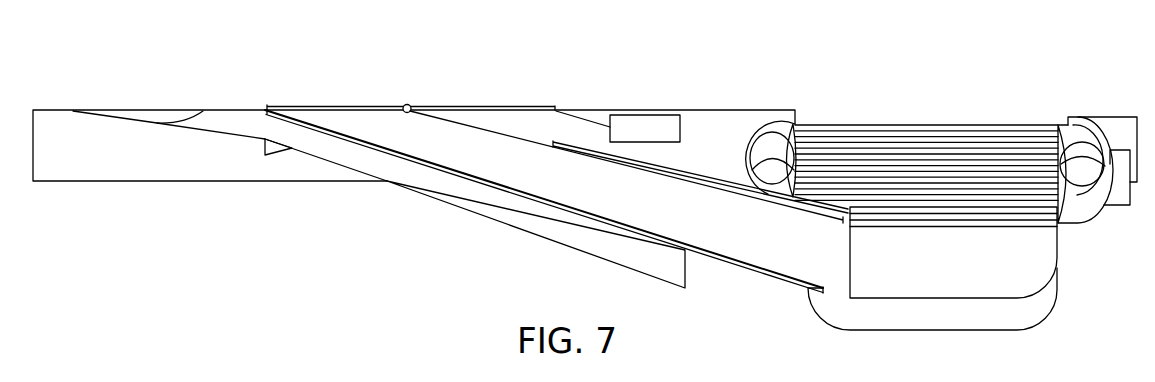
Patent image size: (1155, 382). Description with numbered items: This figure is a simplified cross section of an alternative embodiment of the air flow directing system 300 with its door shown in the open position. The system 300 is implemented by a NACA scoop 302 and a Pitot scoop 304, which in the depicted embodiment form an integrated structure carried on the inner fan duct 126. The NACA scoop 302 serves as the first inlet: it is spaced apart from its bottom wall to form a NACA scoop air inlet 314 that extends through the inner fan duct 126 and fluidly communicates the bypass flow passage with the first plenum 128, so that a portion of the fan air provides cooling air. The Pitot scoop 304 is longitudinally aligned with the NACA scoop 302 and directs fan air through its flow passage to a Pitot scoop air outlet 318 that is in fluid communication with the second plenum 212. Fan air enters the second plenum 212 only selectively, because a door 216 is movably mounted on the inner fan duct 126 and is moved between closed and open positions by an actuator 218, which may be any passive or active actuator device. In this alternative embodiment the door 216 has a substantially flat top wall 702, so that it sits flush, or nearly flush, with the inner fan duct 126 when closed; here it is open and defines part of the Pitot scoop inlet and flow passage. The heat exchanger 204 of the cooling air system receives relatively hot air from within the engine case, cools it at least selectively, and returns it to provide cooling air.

The inner fan duct 126 is at (73, 110).
The first plenum 128 is at (723, 328).
The heat exchanger 204 is at (935, 125).
The second plenum 212 is at (950, 284).
The door 216 is at (402, 98).
The actuator 218 is at (670, 117).
The air flow directing system 300 is at (575, 53).
The NACA scoop 302 is at (168, 104).
The Pitot scoop 304 is at (324, 92).
The NACA scoop air inlet 314 is at (263, 128).
The Pitot scoop air outlet 318 is at (847, 253).
The top wall 702 is at (375, 106).